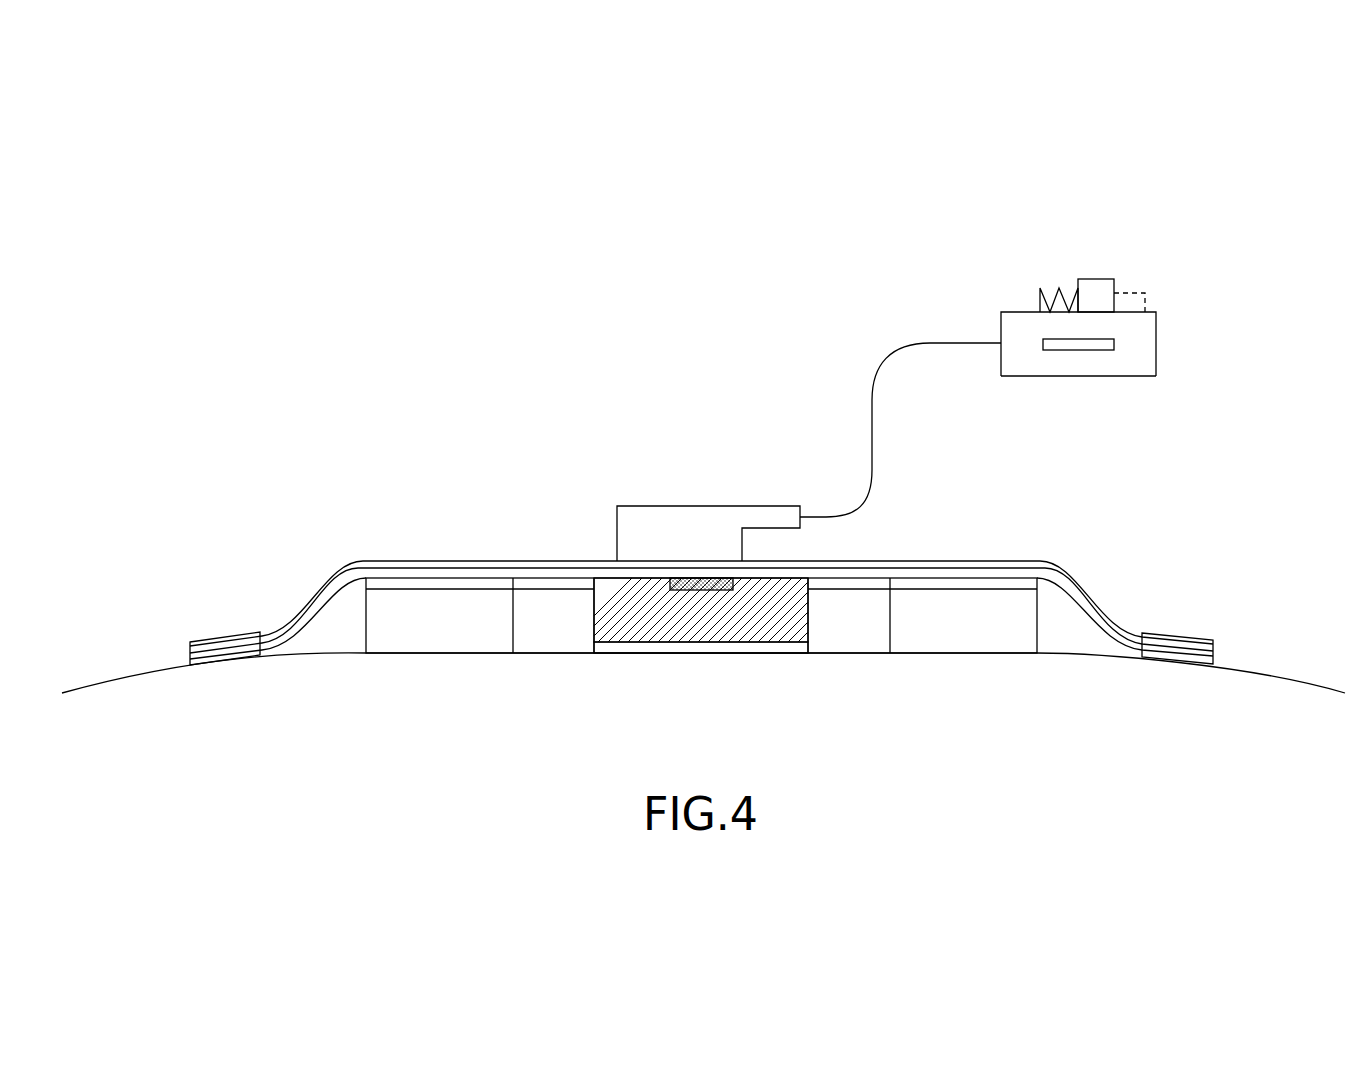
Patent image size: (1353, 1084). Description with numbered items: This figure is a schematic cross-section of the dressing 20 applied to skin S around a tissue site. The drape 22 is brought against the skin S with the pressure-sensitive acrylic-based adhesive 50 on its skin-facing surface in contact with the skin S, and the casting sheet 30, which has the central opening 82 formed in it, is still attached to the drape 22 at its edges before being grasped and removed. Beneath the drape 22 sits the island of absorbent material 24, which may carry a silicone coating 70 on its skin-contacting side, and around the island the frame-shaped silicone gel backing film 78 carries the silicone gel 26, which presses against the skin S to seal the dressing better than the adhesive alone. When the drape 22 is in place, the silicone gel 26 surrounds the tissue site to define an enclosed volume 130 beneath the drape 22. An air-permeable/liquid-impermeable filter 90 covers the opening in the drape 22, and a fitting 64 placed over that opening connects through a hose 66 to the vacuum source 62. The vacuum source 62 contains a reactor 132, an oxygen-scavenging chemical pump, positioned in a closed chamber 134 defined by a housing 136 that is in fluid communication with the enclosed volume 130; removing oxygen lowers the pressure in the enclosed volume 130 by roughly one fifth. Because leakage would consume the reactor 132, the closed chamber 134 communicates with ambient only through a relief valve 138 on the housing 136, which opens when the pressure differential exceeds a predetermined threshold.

The skin S is at (108, 680).
The dressing 20 is at (1268, 456).
The drape 22 is at (300, 614).
The island of absorbent material 24 is at (663, 618).
The silicone gel 26 is at (443, 635).
The casting sheet 30 is at (233, 636).
The pressure-sensitive acrylic-based adhesive 50 is at (248, 655).
The vacuum source 62 is at (1195, 268).
The fitting 64 is at (683, 522).
The hose 66 is at (872, 420).
The silicone coating 70 is at (793, 647).
The silicone gel backing film 78 is at (958, 585).
The central opening 82 is at (512, 620).
The air-permeable/liquid-impermeable filter 90 is at (700, 585).
The enclosed volume 130 is at (582, 629).
The reactor 132 is at (1072, 345).
The closed chamber 134 is at (1137, 347).
The housing 136 is at (1106, 376).
The relief valve 138 is at (1112, 248).